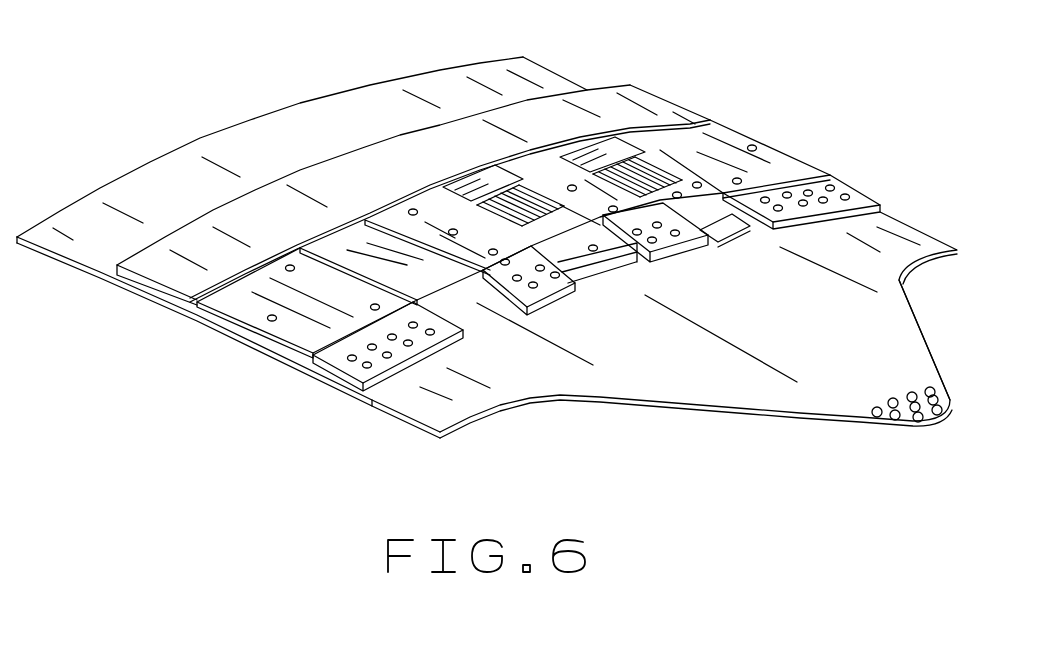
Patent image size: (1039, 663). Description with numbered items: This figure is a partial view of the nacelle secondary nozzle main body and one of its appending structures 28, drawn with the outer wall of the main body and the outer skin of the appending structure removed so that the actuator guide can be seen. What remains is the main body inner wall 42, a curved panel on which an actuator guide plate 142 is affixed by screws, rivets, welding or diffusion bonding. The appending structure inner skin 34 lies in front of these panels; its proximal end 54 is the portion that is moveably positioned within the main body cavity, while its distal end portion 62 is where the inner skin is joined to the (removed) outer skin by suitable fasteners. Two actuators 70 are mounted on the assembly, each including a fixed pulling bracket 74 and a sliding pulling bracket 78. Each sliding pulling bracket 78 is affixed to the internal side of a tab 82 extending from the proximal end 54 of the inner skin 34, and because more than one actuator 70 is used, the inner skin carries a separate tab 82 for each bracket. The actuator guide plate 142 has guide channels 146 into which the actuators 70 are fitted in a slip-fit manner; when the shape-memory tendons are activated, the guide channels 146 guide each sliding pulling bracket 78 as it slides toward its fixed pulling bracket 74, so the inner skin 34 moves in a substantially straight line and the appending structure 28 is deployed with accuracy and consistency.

The appending structure 28 is at (935, 318).
The appending structure inner skin 34 is at (617, 373).
The inner wall 42 is at (323, 150).
The proximal end 54 is at (400, 392).
The distal end portion 62 is at (882, 425).
The actuator 70 is at (474, 168).
The fixed pulling bracket 74 is at (463, 186).
The sliding pulling bracket 78 is at (603, 263).
The tab 82 is at (477, 307).
The actuator guide plate 142 is at (637, 117).
The guide channel 146 is at (766, 239).